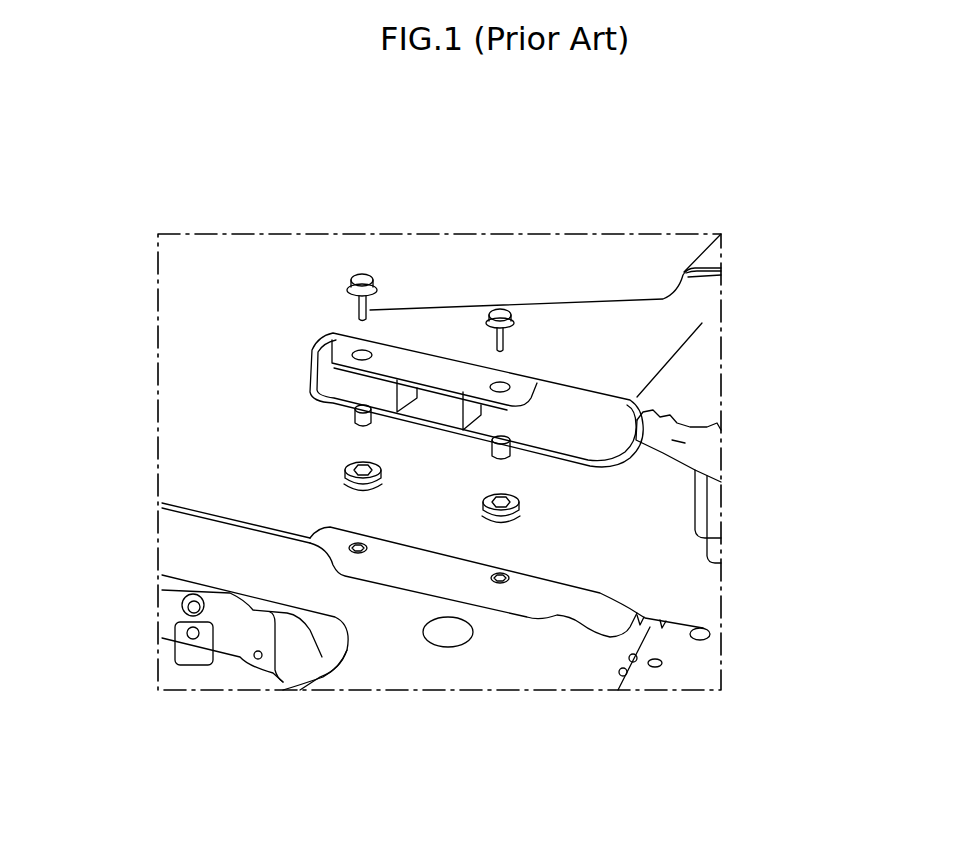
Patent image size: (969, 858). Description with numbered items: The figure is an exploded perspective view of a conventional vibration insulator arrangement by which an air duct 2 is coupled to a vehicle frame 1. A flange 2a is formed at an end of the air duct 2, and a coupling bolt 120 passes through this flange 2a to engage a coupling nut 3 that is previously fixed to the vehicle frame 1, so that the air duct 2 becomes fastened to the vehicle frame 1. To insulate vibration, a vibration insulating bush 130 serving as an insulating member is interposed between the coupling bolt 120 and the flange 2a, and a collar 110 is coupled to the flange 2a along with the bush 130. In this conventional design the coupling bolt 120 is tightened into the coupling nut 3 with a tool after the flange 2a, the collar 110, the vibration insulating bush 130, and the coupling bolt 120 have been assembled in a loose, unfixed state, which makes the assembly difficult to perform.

The vehicle frame 1 is at (427, 563).
The air duct 2 is at (570, 325).
The flange 2a is at (437, 373).
The coupling nut 3 is at (352, 548).
The collar 110 is at (355, 410).
The coupling bolt 120 is at (357, 273).
The vibration insulating bush 130 is at (345, 475).